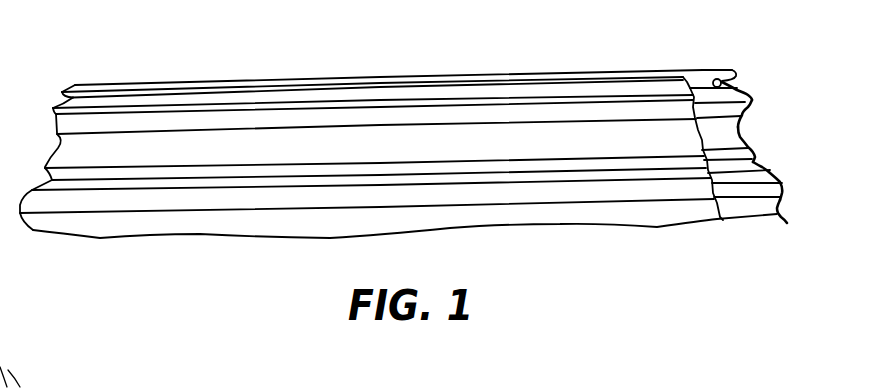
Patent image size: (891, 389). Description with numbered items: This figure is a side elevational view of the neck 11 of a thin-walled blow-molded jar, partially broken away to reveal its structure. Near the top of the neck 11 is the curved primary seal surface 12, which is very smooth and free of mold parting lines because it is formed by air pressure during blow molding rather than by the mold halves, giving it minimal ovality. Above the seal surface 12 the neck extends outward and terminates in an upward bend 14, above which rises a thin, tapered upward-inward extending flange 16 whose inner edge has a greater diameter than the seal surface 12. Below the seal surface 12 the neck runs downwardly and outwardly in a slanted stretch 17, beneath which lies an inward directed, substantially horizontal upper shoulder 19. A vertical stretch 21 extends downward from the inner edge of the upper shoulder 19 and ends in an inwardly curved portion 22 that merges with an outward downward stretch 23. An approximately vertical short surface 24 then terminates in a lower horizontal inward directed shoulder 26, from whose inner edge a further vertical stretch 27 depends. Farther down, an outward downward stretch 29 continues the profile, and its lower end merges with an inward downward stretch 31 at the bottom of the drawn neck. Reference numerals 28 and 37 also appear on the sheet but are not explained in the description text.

The neck 11 is at (518, 60).
The curved primary seal surface 12 is at (706, 73).
The upward bend 14 is at (415, 88).
The upward-inward extending flange 16 is at (732, 57).
The slanted stretch 17 is at (748, 95).
The upper shoulder 19 is at (751, 100).
The vertical stretch 21 is at (463, 117).
The inwardly curved portion 22 is at (350, 138).
The outward downward stretch 23 is at (298, 157).
The approximately vertical short surface 24 is at (250, 166).
The lower horizontal inward directed shoulder 26 is at (756, 160).
The vertical stretch 27 is at (200, 176).
The lower band 28 is at (147, 181).
The outward downward stretch 29 is at (783, 192).
The inward downward stretch 31 is at (780, 215).
The adjacent figure element 37 is at (14, 357).